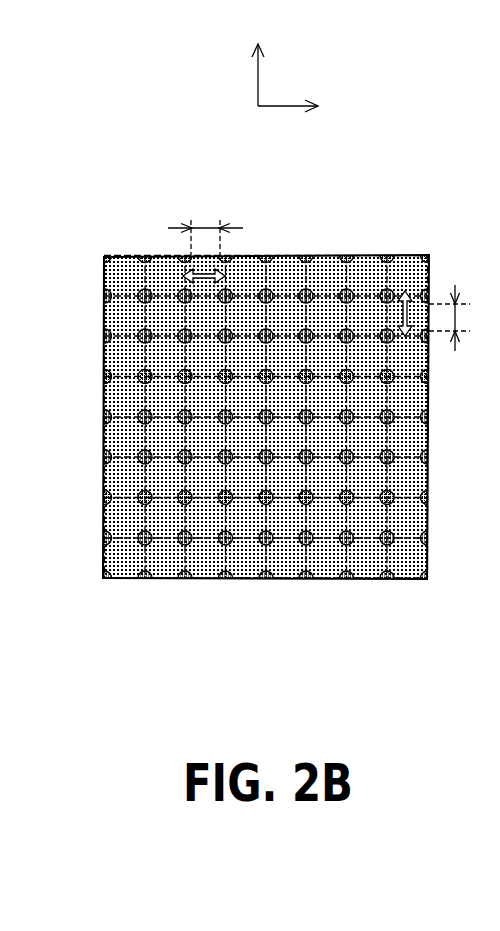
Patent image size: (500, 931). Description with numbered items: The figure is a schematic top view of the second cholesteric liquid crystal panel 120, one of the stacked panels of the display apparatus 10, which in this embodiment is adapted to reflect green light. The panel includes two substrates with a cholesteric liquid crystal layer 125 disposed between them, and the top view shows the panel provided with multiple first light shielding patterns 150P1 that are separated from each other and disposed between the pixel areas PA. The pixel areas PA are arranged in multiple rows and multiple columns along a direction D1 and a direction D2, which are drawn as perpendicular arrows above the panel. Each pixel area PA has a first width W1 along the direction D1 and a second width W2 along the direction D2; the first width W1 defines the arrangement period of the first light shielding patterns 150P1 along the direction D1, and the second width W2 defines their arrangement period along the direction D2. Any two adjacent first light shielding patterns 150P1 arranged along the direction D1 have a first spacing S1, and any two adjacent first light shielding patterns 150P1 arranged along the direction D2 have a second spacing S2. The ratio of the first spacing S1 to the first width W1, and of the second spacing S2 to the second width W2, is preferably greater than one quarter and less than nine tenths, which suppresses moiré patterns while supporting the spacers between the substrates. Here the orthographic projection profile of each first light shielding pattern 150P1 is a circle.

The display apparatus 10 is at (245, 467).
The second cholesteric liquid crystal panel 120 is at (138, 586).
The cholesteric liquid crystal layer 125 is at (241, 249).
The first light shielding patterns 150P1 is at (344, 271).
The pixel area PA is at (313, 250).
The first width W1 is at (193, 264).
The first spacing S1 is at (205, 221).
The second width W2 is at (403, 307).
The second spacing S2 is at (458, 318).
The direction D1 is at (302, 106).
The direction D2 is at (256, 57).